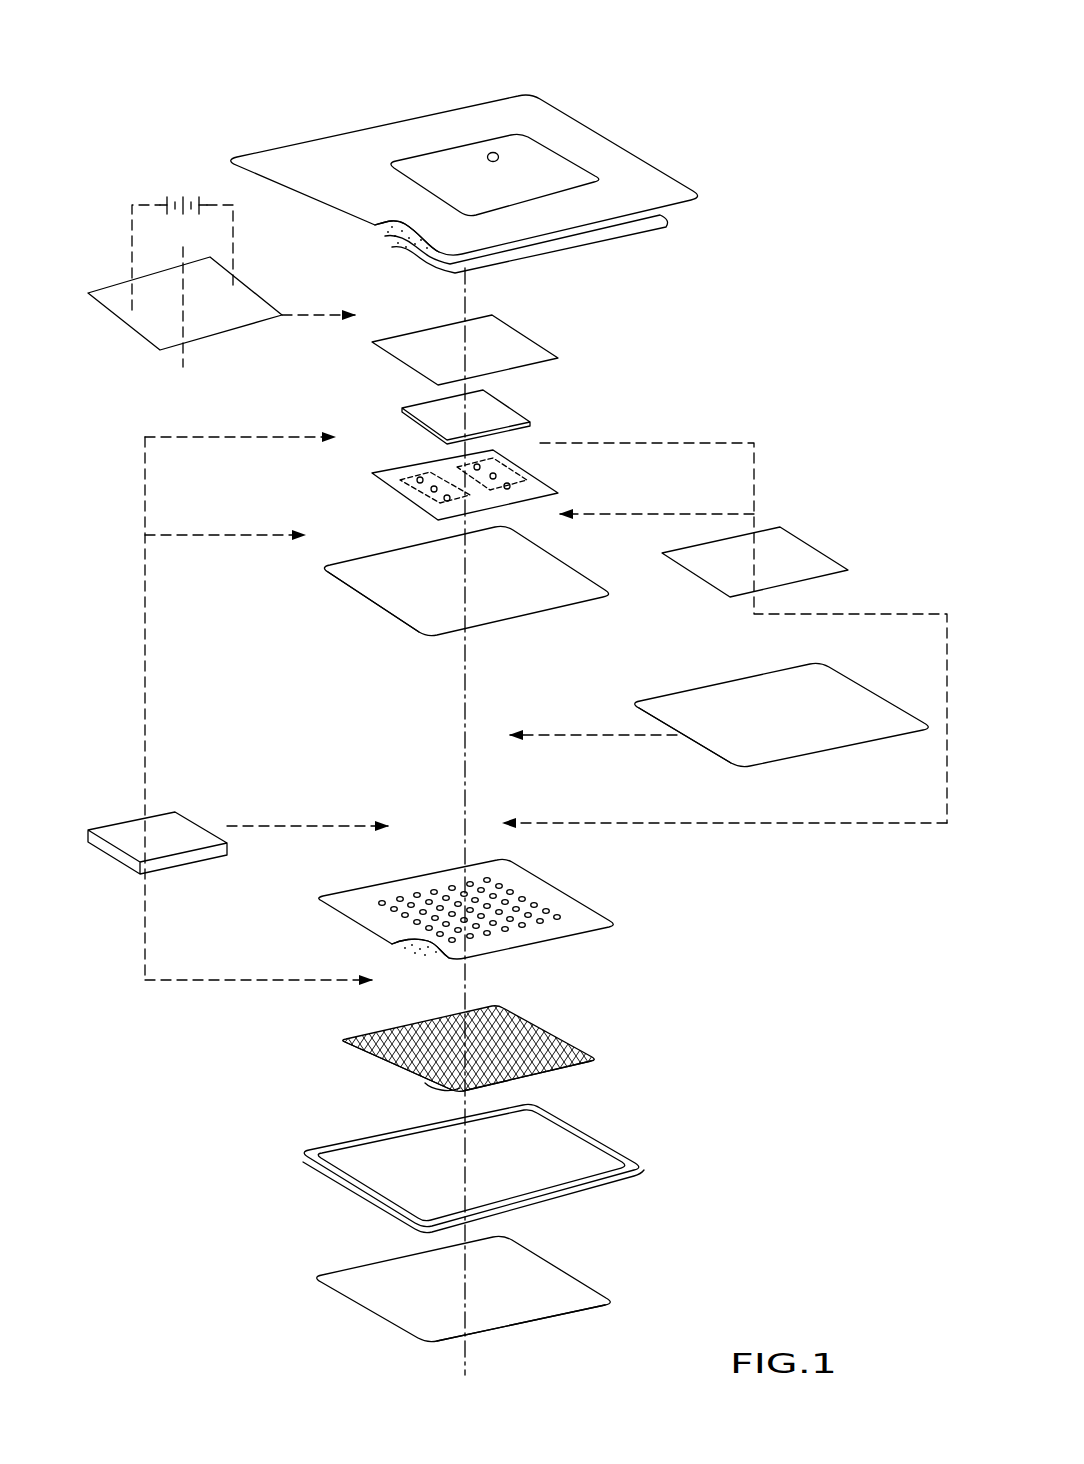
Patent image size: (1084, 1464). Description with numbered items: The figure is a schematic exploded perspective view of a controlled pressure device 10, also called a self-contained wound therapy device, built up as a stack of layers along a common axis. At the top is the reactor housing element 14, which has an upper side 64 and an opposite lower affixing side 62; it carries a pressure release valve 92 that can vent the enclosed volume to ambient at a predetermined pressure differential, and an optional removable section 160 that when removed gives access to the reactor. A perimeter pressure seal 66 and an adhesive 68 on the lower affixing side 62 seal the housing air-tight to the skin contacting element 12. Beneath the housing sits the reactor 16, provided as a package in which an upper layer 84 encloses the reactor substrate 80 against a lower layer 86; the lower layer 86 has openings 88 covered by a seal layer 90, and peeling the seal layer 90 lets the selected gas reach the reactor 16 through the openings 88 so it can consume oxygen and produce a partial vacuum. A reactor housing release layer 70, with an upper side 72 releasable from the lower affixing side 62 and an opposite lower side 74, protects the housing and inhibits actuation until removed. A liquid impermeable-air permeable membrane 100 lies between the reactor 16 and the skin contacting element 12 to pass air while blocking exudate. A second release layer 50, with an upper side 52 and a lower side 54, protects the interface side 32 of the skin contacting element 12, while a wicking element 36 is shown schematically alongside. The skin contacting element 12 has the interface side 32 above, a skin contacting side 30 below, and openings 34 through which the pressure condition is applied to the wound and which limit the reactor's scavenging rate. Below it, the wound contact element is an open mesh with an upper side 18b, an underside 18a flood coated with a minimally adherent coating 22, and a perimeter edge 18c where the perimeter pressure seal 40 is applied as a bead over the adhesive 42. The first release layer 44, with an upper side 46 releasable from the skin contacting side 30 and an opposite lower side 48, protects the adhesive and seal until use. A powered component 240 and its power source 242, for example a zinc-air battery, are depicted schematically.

The controlled pressure device 10 is at (145, 95).
The skin contacting element 12 is at (620, 883).
The reactor housing element 14 is at (745, 140).
The reactor 16 is at (568, 408).
The underside 18a is at (565, 1074).
The upper side 18b is at (555, 1040).
The perimeter edge 18c is at (370, 1060).
The coating 22 is at (430, 1083).
The skin contacting side 30 is at (395, 951).
The interface side 32 is at (350, 905).
The openings 34 is at (530, 905).
The wicking element 36 is at (118, 875).
The perimeter pressure seal 40 is at (287, 1200).
The adhesive 42 is at (420, 957).
The first skin contacting element release layer 44 is at (632, 1275).
The upper side 46 is at (525, 1275).
The lower side 48 is at (548, 1318).
The second skin contacting element release layer 50 is at (790, 777).
The upper side 52 is at (700, 687).
The lower side 54 is at (695, 745).
The lower affixing side 62 is at (372, 232).
The upper side 64 is at (350, 176).
The perimeter pressure seal 66 is at (662, 232).
The adhesive 68 is at (396, 238).
The reactor housing release layer 70 is at (545, 545).
The upper side 72 is at (380, 565).
The lower side 74 is at (386, 622).
The reactor substrate 80 is at (425, 412).
The upper layer 84 is at (410, 343).
The lower layer 86 is at (400, 475).
The openings 88 is at (420, 480).
The seal layer 90 is at (520, 480).
The pressure release valve 92 is at (493, 151).
The liquid impermeable-air permeable membrane 100 is at (834, 525).
The removable section 160 is at (408, 165).
The powered component 240 is at (120, 293).
The power source 242 is at (176, 197).